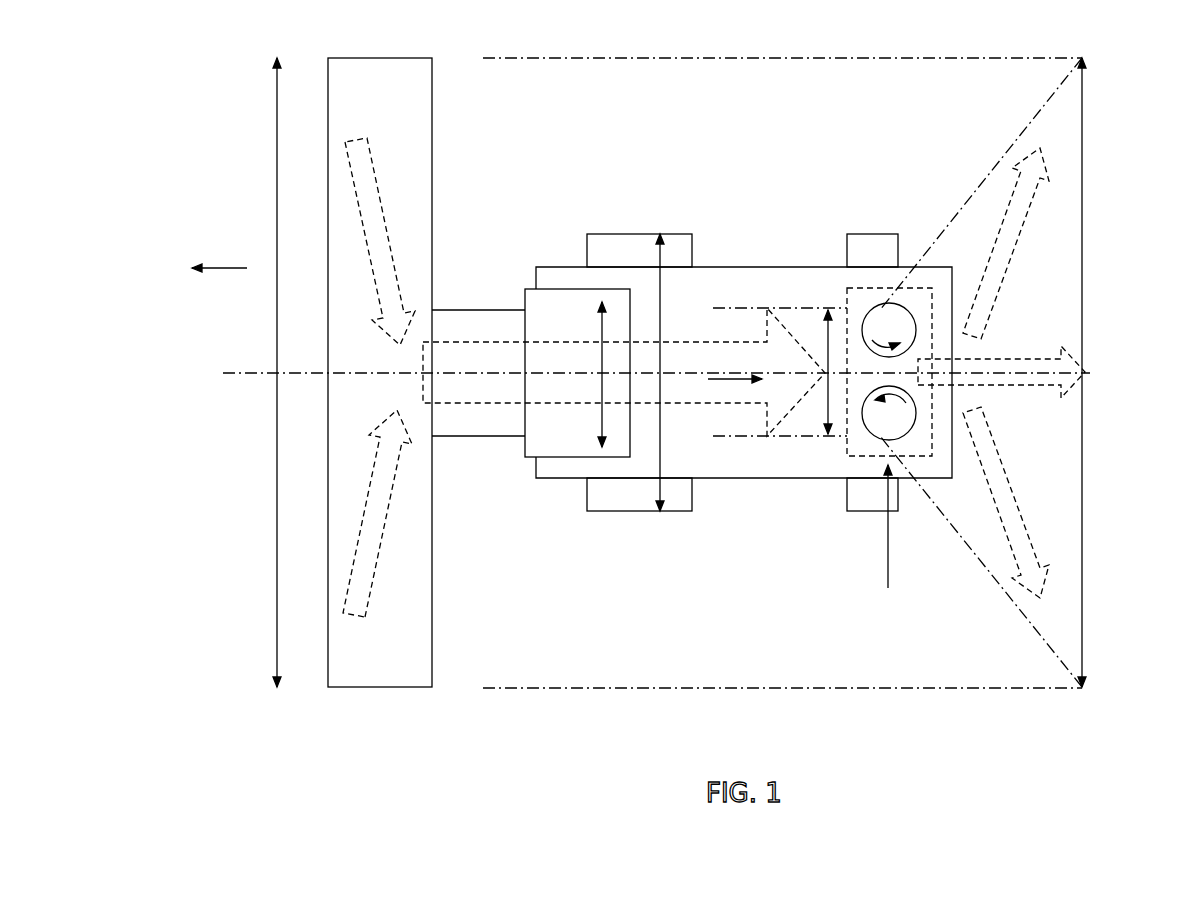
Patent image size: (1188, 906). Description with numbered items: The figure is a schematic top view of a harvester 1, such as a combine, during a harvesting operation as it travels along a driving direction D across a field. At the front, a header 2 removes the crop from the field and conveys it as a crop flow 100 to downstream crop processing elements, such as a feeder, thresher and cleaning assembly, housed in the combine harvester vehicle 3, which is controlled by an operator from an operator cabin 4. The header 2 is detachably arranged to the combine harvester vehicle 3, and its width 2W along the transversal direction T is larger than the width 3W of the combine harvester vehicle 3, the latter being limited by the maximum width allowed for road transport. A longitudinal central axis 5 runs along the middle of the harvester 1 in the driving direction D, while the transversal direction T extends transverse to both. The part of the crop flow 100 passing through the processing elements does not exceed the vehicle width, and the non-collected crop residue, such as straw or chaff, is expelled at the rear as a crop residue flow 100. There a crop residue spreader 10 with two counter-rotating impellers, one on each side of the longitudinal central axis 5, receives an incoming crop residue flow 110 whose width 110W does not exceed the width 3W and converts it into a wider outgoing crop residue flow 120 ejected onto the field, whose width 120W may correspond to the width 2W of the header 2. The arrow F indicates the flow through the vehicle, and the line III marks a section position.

The harvester 1 is at (785, 130).
The header 2 is at (366, 80).
The width of header 2W is at (275, 460).
The combine harvester vehicle 3 is at (717, 267).
The width of combine harvester vehicle 3W is at (660, 455).
The operator cabin 4 is at (557, 300).
The longitudinal central axis 5 is at (358, 372).
The crop residue spreader 10 is at (880, 283).
The crop flow 100 is at (387, 230).
The incoming crop residue flow 110 is at (810, 330).
The width of incoming crop residue flow 110W is at (828, 412).
The outgoing crop residue flow 120 is at (1053, 128).
The width of outgoing crop residue flow 120W is at (1082, 462).
The driving direction D is at (219, 256).
The feed direction F is at (735, 369).
The transversal direction T is at (600, 386).
The section line III is at (896, 526).